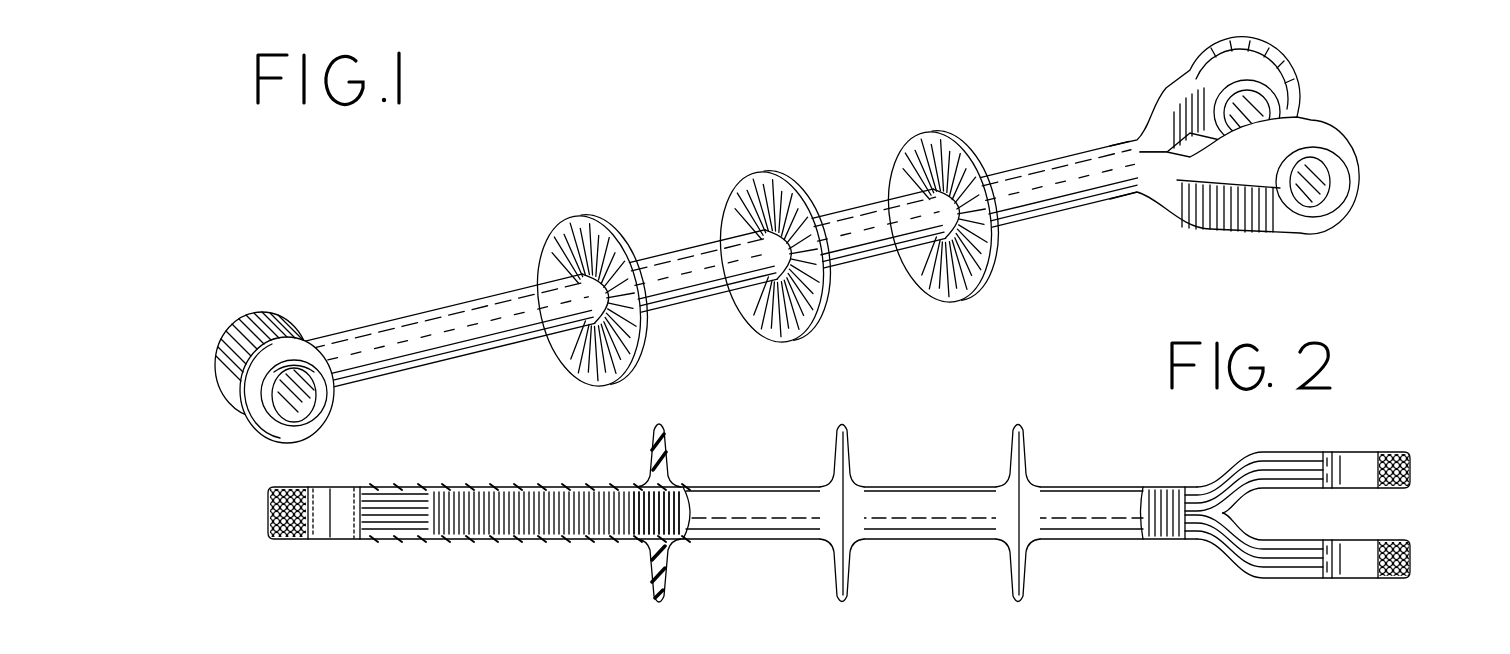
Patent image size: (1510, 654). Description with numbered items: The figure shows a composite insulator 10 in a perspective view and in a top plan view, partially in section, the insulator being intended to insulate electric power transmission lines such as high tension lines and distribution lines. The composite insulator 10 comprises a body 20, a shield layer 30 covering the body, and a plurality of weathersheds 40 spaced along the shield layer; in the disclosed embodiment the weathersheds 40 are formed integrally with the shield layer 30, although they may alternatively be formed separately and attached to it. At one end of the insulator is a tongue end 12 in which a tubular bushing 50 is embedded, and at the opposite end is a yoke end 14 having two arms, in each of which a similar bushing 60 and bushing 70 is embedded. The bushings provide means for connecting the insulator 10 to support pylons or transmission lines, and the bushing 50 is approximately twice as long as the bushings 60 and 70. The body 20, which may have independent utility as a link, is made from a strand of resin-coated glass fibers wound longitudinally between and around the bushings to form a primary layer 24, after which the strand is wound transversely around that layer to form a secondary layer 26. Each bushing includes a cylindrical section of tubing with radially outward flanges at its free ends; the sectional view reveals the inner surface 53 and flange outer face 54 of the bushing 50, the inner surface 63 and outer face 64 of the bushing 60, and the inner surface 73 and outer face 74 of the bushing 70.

In FIG. 1, the composite insulator 10 is at (650, 185).
In FIG. 2, the composite insulator 10 is at (745, 585).
In FIG. 1, the tongue end 12 is at (195, 405).
In FIG. 2, the tongue end 12 is at (245, 520).
In FIG. 1, the yoke end 14 is at (1360, 105).
In FIG. 2, the yoke end 14 is at (1425, 515).
In FIG. 1, the body 20 is at (436, 305).
In FIG. 2, the body 20 is at (535, 540).
In FIG. 2, the primary layer 24 is at (405, 500).
In FIG. 2, the secondary layer 26 is at (578, 500).
In FIG. 1, the shield layer 30 is at (870, 248).
In FIG. 2, the shield layer 30 is at (942, 540).
In FIG. 1, the weathersheds 40 is at (945, 142).
In FIG. 2, the weathersheds 40 is at (660, 470).
In FIG. 1, the tubular bushing 50 is at (320, 395).
In FIG. 2, the tubular bushing 50 is at (322, 500).
In FIG. 1, the inner surface 53 is at (276, 412).
In FIG. 2, the inner surface 53 is at (320, 525).
In FIG. 1, the outer face 54 is at (301, 370).
In FIG. 2, the outer face 54 is at (362, 490).
In FIG. 1, the bushing 60 is at (1313, 186).
In FIG. 2, the bushing 60 is at (1360, 545).
In FIG. 1, the inner surface 63 is at (1305, 162).
In FIG. 2, the inner surface 63 is at (1360, 568).
In FIG. 1, the outer face 64 is at (1295, 205).
In FIG. 2, the outer face 64 is at (1320, 570).
In FIG. 1, the bushing 70 is at (1223, 103).
In FIG. 2, the bushing 70 is at (1345, 470).
In FIG. 1, the inner surface 73 is at (1257, 120).
In FIG. 2, the inner surface 73 is at (1365, 470).
In FIG. 1, the outer face 74 is at (1243, 92).
In FIG. 2, the outer face 74 is at (1325, 455).